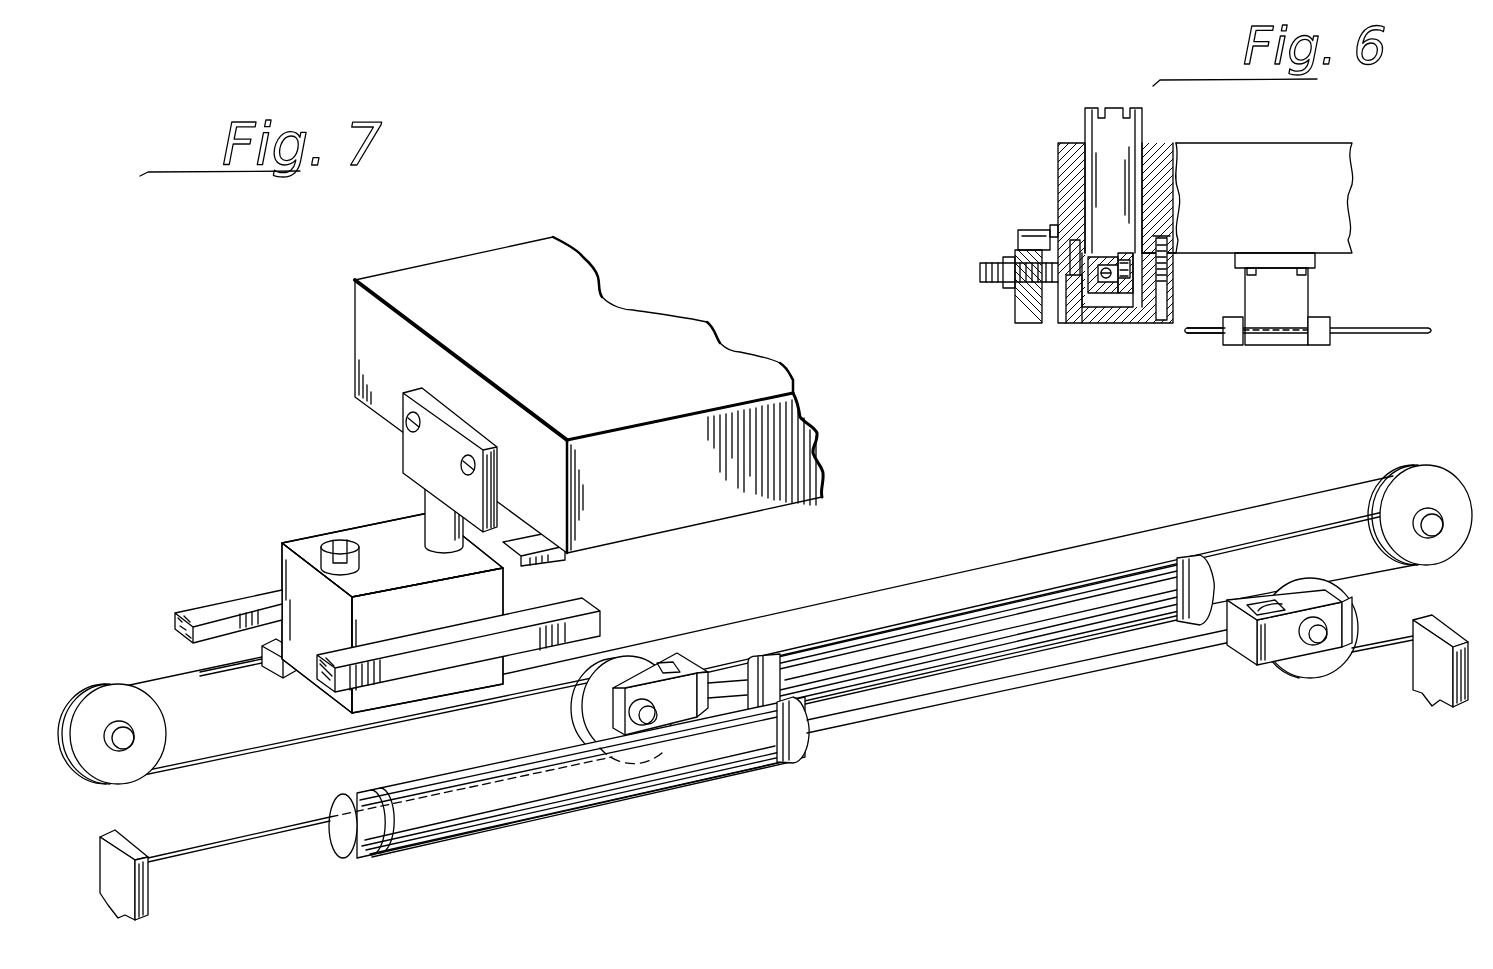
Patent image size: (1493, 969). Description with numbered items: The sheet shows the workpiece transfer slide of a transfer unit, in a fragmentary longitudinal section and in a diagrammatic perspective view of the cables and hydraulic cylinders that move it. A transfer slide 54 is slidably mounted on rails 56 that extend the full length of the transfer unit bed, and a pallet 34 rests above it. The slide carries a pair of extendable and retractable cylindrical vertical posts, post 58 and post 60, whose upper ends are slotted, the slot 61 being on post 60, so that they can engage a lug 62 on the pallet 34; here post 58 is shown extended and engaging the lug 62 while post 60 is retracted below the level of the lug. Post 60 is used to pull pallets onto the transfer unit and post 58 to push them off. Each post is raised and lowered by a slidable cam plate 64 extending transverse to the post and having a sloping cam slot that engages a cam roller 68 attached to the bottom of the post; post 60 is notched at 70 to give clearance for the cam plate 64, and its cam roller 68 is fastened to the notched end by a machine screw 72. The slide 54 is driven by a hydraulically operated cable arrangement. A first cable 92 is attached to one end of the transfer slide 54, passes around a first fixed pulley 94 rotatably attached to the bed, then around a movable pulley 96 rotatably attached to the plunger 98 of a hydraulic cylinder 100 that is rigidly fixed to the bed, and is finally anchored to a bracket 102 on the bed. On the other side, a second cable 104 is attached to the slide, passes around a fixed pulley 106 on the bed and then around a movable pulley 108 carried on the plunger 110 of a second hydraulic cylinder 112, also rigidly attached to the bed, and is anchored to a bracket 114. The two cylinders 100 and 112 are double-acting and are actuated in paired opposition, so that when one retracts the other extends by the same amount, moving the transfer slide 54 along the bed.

In FIG. 7, the pallet 34 is at (498, 268).
In FIG. 6, the transfer slide 54 is at (1238, 180).
In FIG. 7, the transfer slide 54 is at (330, 515).
In FIG. 7, the rails 56 is at (248, 603).
In FIG. 7, the vertical post 58 is at (432, 505).
In FIG. 6, the vertical post 60 is at (1107, 138).
In FIG. 7, the vertical post 60 is at (330, 558).
In FIG. 6, the slot 61 is at (1113, 108).
In FIG. 7, the slot 61 is at (338, 553).
In FIG. 7, the lug 62 is at (422, 450).
In FIG. 6, the cam plate 64 is at (1133, 250).
In FIG. 6, the cam roller 68 is at (1123, 293).
In FIG. 6, the notch 70 is at (1117, 253).
In FIG. 6, the machine screw 72 is at (1107, 293).
In FIG. 6, the first cable 92 is at (1208, 333).
In FIG. 7, the first cable 92 is at (203, 670).
In FIG. 7, the first fixed pulley 94 is at (147, 713).
In FIG. 7, the movable pulley 96 is at (637, 670).
In FIG. 7, the plunger 98 is at (723, 683).
In FIG. 7, the hydraulic cylinder 100 is at (973, 627).
In FIG. 7, the bracket 102 is at (148, 890).
In FIG. 6, the second cable 104 is at (1420, 287).
In FIG. 7, the second cable 104 is at (1103, 535).
In FIG. 7, the fixed pulley 106 is at (1427, 483).
In FIG. 7, the movable pulley 108 is at (1350, 608).
In FIG. 7, the plunger 110 is at (1087, 667).
In FIG. 7, the second hydraulic cylinder 112 is at (727, 760).
In FIG. 7, the bracket 114 is at (1413, 673).